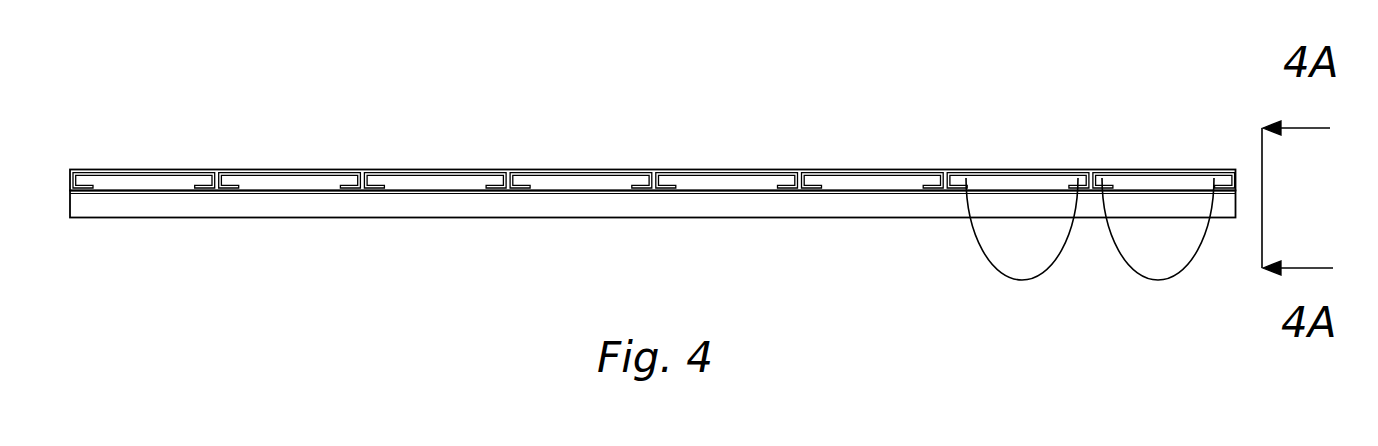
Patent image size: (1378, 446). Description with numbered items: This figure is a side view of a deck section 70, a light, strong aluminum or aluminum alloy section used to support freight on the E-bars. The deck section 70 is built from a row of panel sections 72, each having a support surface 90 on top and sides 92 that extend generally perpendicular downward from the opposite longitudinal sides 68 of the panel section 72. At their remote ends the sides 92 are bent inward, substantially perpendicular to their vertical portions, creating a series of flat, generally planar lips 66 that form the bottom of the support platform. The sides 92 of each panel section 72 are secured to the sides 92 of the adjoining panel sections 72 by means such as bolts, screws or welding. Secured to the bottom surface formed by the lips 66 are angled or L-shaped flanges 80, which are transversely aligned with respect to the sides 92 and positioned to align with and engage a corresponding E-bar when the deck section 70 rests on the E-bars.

The deck section 70 is at (236, 99).
The lip 66 is at (488, 181).
The longitudinal side 68 is at (1237, 178).
The panel section 72 is at (1089, 136).
The flange 80 is at (418, 203).
The support surface 90 is at (1005, 173).
The side 92 is at (1090, 244).